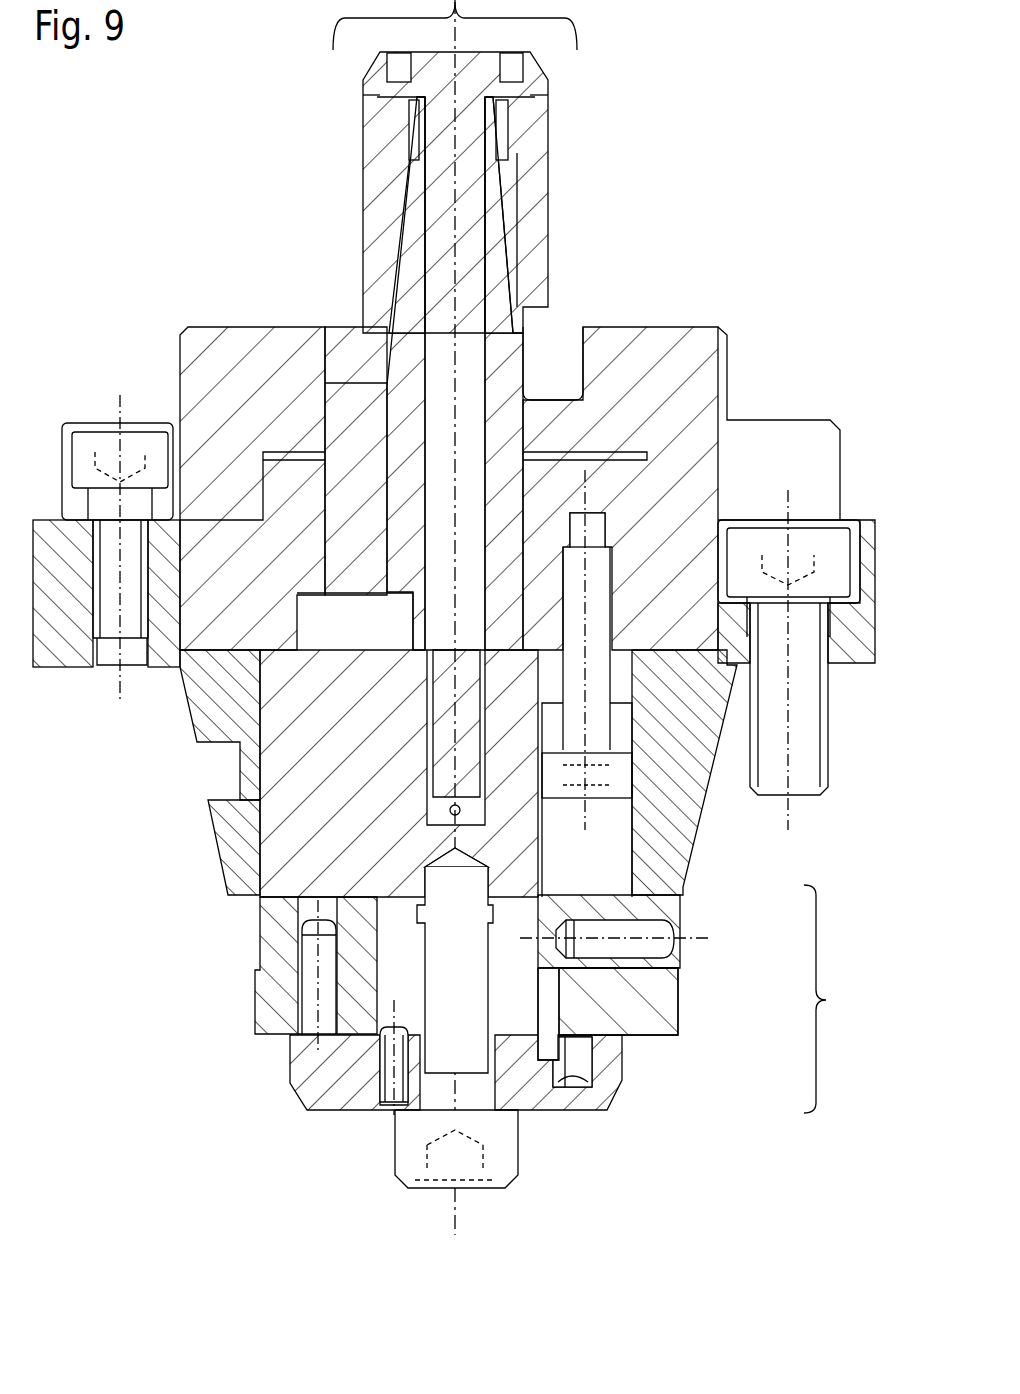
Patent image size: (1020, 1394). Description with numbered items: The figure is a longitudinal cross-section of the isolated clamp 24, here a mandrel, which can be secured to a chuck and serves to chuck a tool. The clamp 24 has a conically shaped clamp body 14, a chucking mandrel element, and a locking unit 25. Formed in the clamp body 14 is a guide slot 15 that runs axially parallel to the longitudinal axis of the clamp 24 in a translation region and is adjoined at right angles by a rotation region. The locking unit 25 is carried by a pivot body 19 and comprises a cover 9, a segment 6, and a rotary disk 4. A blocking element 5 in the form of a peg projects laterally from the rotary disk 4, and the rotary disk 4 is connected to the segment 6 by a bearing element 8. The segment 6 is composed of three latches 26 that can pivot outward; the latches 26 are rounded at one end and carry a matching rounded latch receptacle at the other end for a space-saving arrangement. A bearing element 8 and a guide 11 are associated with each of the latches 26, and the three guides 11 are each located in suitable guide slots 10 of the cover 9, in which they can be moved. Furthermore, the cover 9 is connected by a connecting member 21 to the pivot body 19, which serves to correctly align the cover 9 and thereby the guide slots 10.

The rotary disk 4 is at (650, 911).
The blocking element 5 is at (637, 930).
The segment 6 is at (640, 988).
The bearing element 8 is at (312, 1017).
The cover 9 is at (363, 1072).
The guide slot 10 is at (560, 1080).
The guide 11 is at (583, 1050).
The clamp body 14 is at (240, 860).
The guide slot 15 is at (227, 768).
The pivot body 19 is at (315, 850).
The connecting member 21 is at (400, 1087).
The clamp 24 is at (694, 276).
The locking unit 25 is at (826, 1000).
The latch 26 is at (655, 980).